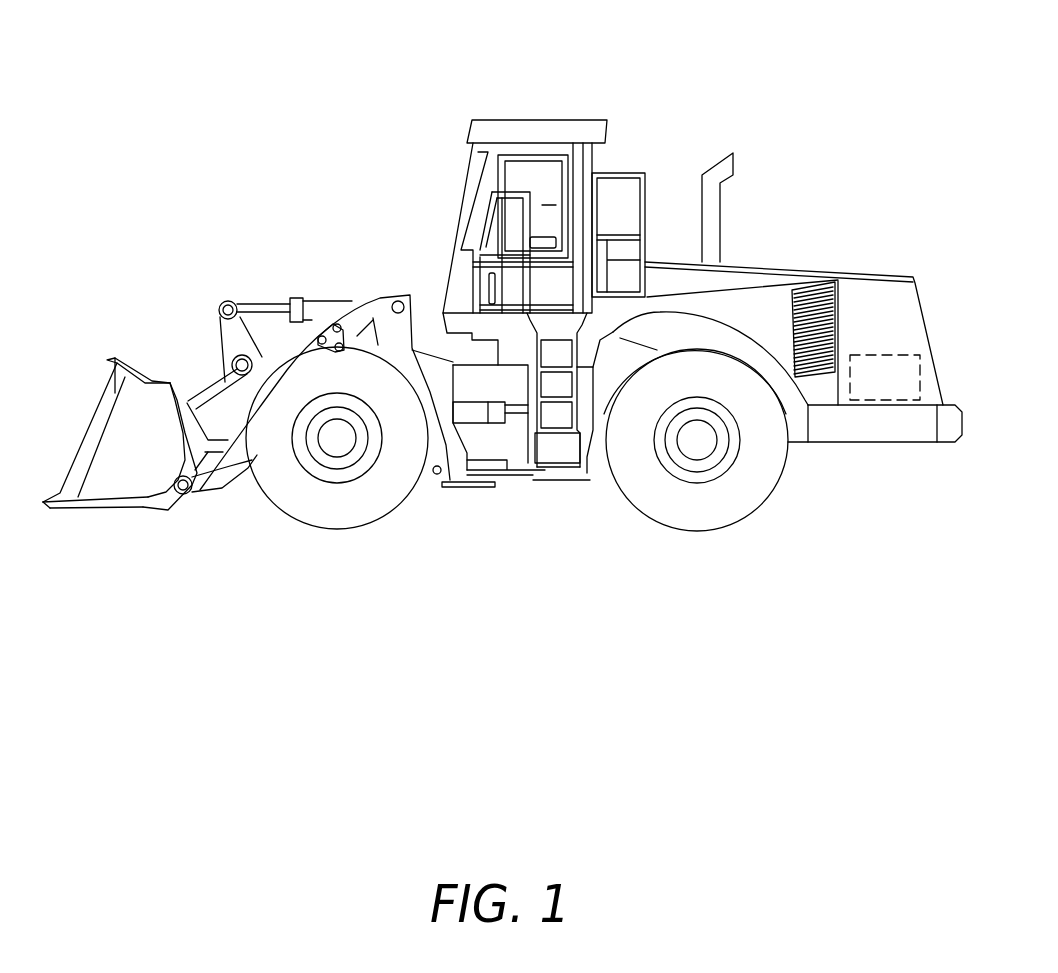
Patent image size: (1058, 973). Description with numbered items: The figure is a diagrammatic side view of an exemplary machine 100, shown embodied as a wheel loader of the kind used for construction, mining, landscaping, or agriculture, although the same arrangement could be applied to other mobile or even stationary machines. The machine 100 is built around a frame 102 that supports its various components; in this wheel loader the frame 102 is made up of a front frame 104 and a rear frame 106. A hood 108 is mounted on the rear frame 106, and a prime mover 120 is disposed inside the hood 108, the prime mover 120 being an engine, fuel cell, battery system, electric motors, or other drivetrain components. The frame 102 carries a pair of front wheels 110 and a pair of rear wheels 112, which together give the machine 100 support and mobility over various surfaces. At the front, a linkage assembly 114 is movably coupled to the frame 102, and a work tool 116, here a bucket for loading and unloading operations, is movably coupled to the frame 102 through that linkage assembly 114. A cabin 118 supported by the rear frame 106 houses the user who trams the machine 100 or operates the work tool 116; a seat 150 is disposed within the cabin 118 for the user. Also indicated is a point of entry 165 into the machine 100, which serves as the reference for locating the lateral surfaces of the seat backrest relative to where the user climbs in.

The machine 100 is at (158, 53).
The frame 102 is at (610, 547).
The front frame 104 is at (457, 490).
The rear frame 106 is at (593, 490).
The hood 108 is at (880, 290).
The front wheels 110 is at (340, 512).
The rear wheels 112 is at (690, 510).
The linkage assembly 114 is at (223, 327).
The work tool 116 is at (160, 460).
The cabin 118 is at (541, 128).
The prime mover 120 is at (900, 390).
The seat 150 is at (542, 236).
The point of entry 165 is at (560, 200).